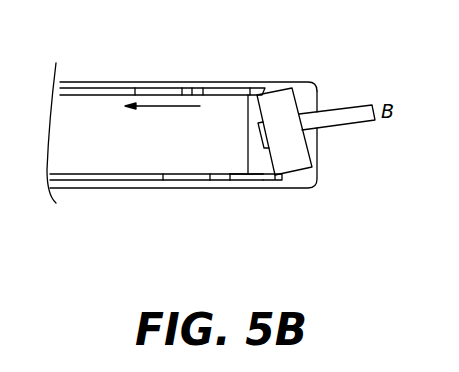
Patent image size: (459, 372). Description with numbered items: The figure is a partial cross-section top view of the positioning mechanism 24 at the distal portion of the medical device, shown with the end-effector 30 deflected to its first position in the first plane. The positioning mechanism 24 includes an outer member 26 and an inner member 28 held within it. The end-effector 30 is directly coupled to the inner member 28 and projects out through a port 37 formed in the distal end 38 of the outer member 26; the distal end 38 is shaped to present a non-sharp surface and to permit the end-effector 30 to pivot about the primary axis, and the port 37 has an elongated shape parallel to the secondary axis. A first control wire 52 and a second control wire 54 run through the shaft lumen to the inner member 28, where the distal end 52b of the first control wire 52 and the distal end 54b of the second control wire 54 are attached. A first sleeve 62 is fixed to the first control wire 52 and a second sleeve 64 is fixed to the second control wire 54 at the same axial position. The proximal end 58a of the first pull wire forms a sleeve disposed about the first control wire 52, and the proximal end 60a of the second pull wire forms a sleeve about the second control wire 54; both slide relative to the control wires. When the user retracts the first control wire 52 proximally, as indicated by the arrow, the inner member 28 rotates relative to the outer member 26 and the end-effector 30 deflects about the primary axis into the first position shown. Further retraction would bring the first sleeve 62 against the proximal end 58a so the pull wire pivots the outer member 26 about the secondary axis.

The positioning mechanism 24 is at (298, 194).
The outer member 26 is at (280, 82).
The inner member 28 is at (303, 152).
The end-effector 30 is at (360, 122).
The port 37 is at (317, 107).
The distal end of outer member 38 is at (317, 100).
The first control wire 52 is at (98, 92).
The distal end of first control wire 52b is at (241, 85).
The second control wire 54 is at (110, 178).
The distal end of second control wire 54b is at (272, 180).
The proximal end of first pull wire 58a is at (169, 90).
The proximal end of second pull wire 60a is at (198, 177).
The first sleeve 62 is at (193, 90).
The second sleeve 64 is at (245, 180).